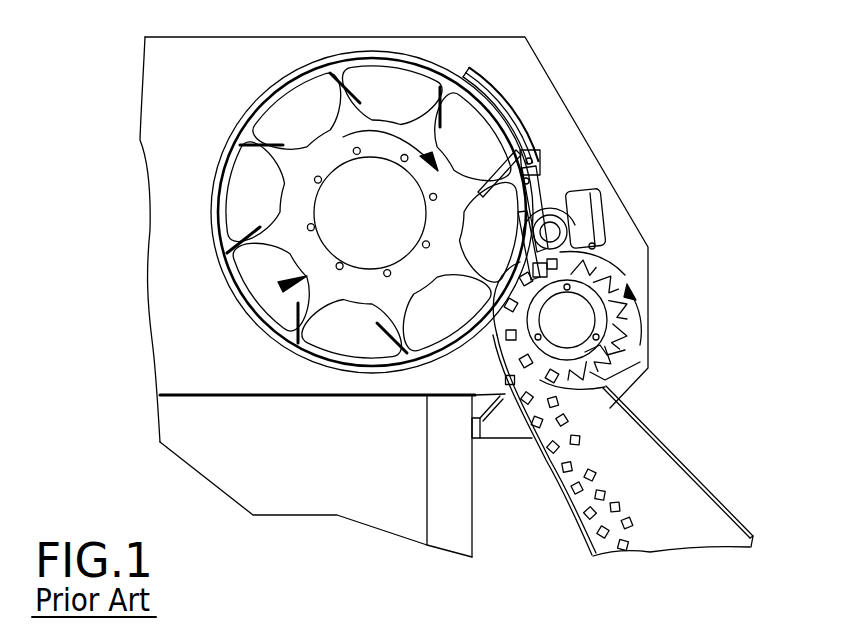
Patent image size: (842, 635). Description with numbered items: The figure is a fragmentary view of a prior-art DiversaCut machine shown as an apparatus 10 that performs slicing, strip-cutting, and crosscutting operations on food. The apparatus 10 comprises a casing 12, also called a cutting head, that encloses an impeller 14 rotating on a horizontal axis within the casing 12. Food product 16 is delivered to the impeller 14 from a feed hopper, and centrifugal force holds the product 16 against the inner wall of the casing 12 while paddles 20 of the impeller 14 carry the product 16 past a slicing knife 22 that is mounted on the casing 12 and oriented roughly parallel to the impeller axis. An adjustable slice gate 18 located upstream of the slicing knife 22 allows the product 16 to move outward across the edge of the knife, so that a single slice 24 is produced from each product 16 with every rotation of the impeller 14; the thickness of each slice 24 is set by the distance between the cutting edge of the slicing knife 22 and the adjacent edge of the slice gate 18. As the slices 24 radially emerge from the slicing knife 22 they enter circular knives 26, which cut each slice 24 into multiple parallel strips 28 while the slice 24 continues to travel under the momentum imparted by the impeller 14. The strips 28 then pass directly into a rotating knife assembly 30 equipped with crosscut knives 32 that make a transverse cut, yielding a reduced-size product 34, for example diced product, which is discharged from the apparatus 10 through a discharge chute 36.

The apparatus 10 is at (755, 185).
The casing 12 is at (240, 130).
The impeller 14 is at (295, 282).
The food product 16 is at (468, 130).
The slice gate 18 is at (521, 136).
The paddles 20 is at (262, 160).
The slicing knife 22 is at (443, 223).
The slice 24 is at (556, 225).
The circular knives 26 is at (582, 226).
The strips 28 is at (540, 268).
The rotating knife assembly 30 is at (600, 320).
The crosscut knives 32 is at (588, 374).
The reduced-size product 34 is at (625, 432).
The discharge chute 36 is at (688, 475).